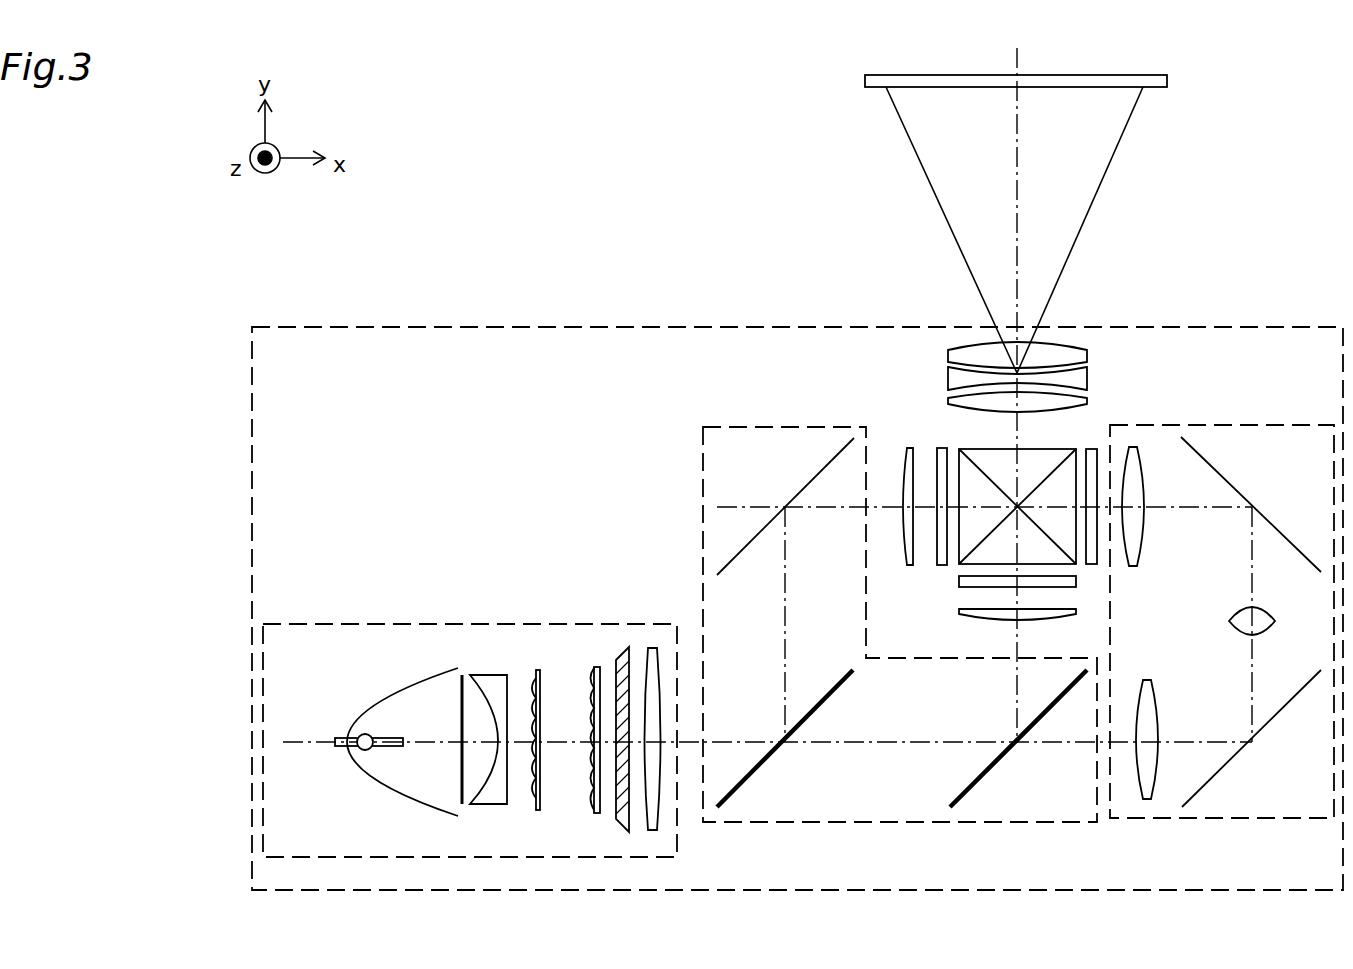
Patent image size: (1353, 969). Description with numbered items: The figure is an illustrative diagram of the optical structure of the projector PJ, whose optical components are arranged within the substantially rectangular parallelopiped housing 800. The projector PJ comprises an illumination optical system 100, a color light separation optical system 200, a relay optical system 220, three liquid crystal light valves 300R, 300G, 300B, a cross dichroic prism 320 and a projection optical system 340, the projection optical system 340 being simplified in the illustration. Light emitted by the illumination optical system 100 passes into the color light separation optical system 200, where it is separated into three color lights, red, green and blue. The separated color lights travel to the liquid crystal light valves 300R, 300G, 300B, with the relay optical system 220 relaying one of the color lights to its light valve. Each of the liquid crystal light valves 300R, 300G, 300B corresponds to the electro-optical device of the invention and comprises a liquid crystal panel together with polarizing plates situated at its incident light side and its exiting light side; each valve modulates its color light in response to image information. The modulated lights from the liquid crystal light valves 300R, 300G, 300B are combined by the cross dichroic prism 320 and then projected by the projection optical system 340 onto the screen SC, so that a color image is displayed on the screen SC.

The housing 800 is at (497, 327).
The illumination optical system 100 is at (495, 624).
The color light separation optical system 200 is at (700, 455).
The relay optical system 220 is at (1143, 820).
The liquid crystal light valve 300R is at (940, 566).
The liquid crystal light valve 300G is at (958, 580).
The liquid crystal light valve 300B is at (1092, 448).
The cross dichroic prism 320 is at (960, 448).
The projection optical system 340 is at (948, 378).
The screen SC is at (865, 82).
The projector PJ is at (1247, 275).